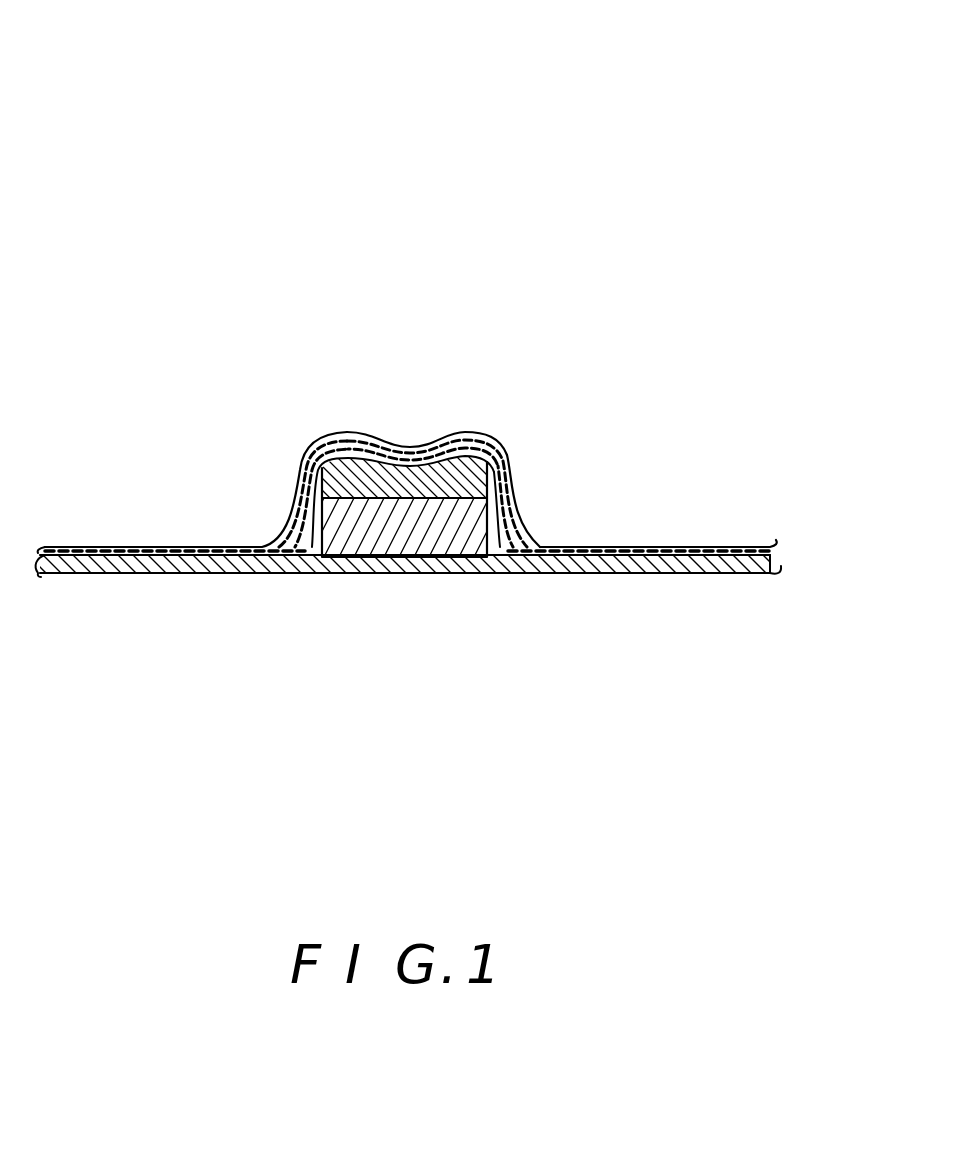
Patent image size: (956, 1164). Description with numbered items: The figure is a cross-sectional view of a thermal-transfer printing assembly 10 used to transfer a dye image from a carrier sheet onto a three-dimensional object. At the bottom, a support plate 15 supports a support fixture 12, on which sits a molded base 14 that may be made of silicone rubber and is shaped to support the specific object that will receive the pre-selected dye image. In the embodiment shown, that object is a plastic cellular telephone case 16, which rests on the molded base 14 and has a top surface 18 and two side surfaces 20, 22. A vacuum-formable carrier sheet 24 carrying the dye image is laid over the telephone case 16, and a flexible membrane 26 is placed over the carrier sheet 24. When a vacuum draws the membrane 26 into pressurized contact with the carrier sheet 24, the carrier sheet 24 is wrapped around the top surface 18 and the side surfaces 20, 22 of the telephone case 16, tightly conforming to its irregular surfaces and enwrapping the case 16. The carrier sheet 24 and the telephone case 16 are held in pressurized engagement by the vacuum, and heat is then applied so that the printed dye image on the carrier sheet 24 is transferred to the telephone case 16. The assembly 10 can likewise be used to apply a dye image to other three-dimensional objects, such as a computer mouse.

The printing assembly 10 is at (605, 182).
The support fixture 12 is at (342, 535).
The molded base 14 is at (450, 480).
The support plate 15 is at (608, 573).
The cellular telephone case 16 is at (373, 498).
The top surface 18 is at (418, 447).
The side surface 20 is at (297, 467).
The side surface 22 is at (493, 440).
The vacuum-formable carrier sheet 24 is at (517, 472).
The flexible membrane 26 is at (670, 573).